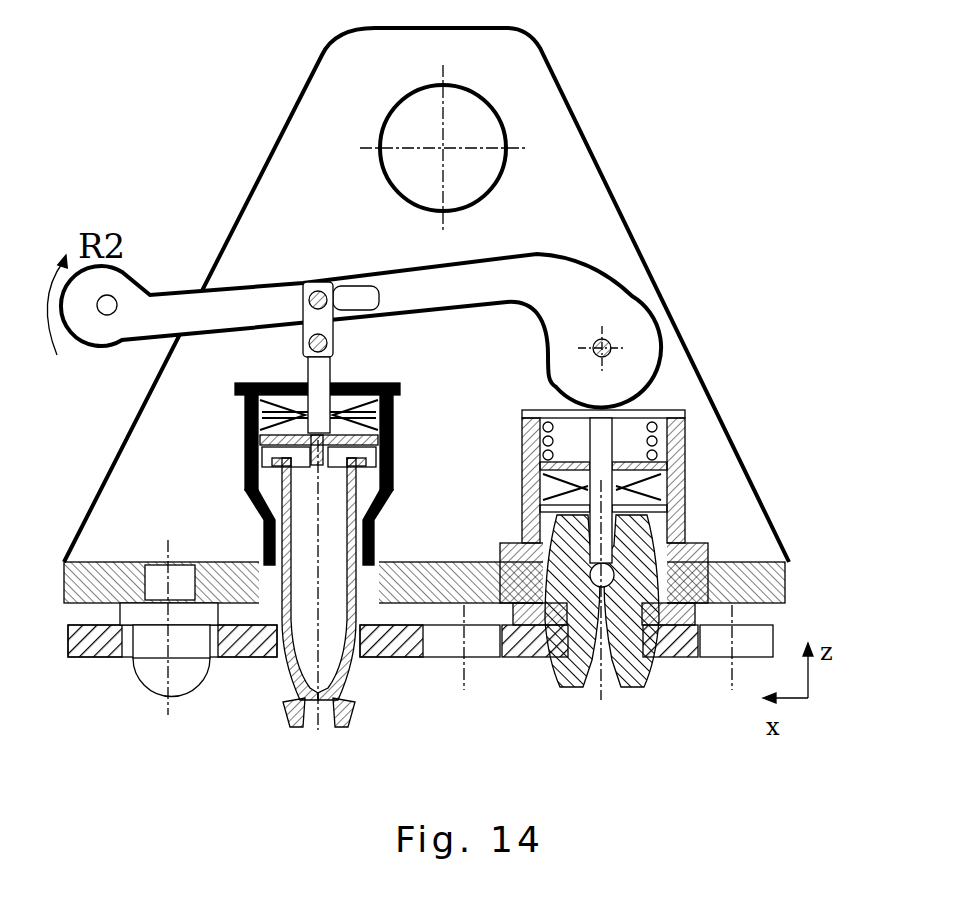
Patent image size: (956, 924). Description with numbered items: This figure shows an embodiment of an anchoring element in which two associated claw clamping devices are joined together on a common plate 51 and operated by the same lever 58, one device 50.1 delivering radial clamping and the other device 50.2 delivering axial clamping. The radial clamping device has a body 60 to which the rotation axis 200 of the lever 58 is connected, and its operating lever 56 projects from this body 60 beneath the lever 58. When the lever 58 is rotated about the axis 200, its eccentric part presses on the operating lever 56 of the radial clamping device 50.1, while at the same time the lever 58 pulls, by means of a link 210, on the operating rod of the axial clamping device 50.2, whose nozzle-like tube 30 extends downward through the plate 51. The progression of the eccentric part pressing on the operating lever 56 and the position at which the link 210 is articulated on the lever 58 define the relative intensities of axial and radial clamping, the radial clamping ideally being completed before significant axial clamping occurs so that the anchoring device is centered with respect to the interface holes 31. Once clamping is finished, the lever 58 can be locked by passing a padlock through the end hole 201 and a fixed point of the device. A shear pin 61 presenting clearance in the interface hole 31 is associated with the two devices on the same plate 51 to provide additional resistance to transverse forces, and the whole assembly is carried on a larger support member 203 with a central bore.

The bracket / support arm 203 is at (543, 217).
The lever 58 is at (557, 277).
The axis 200 is at (608, 343).
The operating lever 56 is at (605, 447).
The first valve unit 50.1 is at (715, 436).
The plate 51 is at (723, 568).
The link 210 is at (298, 298).
The end hole 201 is at (107, 312).
The axial clamping device 50.2 is at (228, 420).
The body 60 is at (530, 492).
The shear pin 61 is at (152, 635).
The interface hole 31 is at (450, 657).
The nozzle tube 30 is at (390, 657).